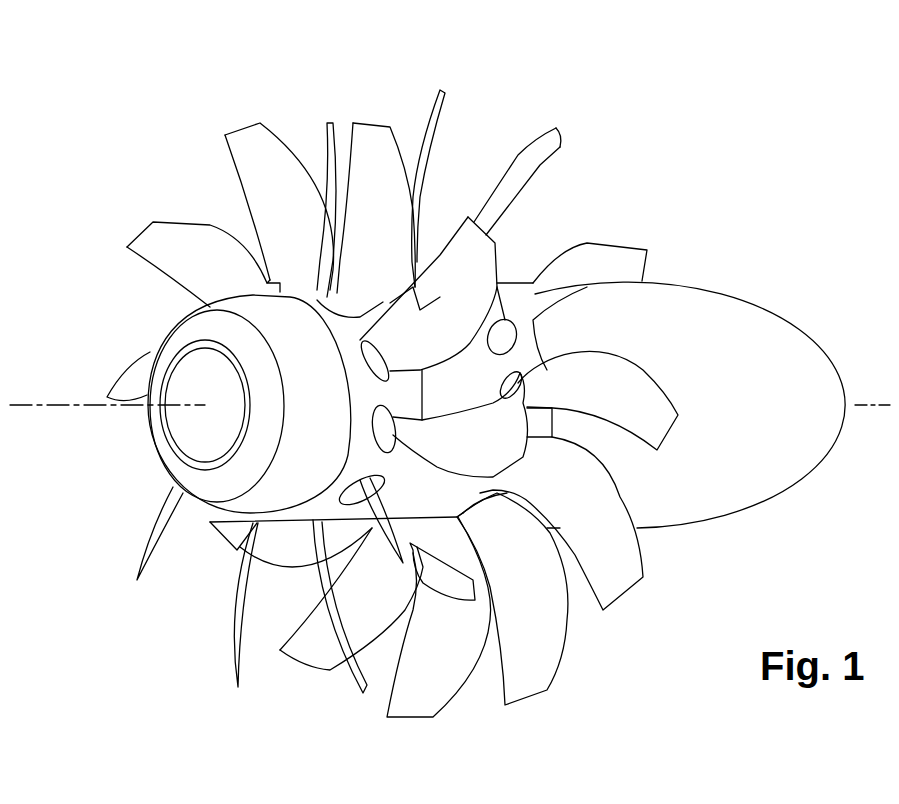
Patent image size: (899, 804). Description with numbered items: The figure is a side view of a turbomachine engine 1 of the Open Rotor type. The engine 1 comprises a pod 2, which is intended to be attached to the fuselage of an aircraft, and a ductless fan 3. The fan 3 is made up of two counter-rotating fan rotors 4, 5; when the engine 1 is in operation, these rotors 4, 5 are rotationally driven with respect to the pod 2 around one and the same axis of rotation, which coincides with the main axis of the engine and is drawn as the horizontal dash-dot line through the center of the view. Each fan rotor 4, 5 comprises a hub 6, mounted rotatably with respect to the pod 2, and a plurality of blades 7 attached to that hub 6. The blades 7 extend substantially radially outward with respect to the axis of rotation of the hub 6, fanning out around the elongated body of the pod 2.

The engine 1 is at (747, 235).
The pod 2 is at (775, 350).
The ductless fan 3 is at (240, 112).
The fan rotor 4 is at (183, 221).
The fan rotor 5 is at (522, 155).
The hub 6 is at (377, 460).
The blades 7 is at (282, 166).